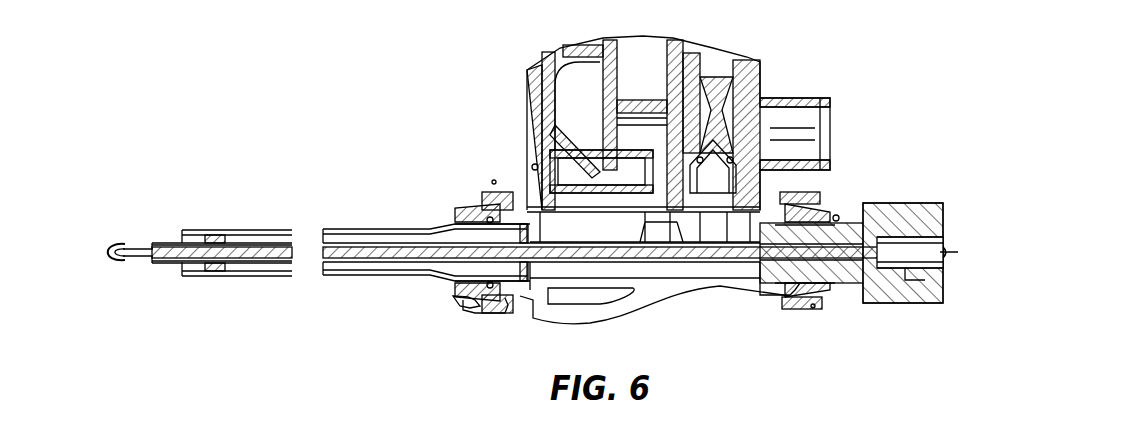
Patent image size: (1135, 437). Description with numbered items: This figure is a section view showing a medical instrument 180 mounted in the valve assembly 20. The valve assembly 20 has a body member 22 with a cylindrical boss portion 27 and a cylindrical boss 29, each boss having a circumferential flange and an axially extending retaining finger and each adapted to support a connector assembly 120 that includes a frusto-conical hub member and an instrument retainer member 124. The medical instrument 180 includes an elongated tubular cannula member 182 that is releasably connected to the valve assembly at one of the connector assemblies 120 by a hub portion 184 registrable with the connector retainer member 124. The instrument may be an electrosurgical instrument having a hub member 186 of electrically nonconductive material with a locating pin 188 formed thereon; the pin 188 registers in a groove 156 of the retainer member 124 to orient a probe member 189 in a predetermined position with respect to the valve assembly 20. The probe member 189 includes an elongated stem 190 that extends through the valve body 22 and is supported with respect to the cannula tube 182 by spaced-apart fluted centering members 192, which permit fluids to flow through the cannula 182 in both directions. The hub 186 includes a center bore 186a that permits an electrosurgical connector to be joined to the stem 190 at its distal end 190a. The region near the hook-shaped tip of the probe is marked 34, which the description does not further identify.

The valve assembly 20 is at (760, 44).
The body member 22 is at (728, 293).
The cylindrical boss portion 27 is at (776, 297).
The cylindrical boss 29 is at (518, 305).
The hook 34 is at (104, 251).
The connector assembly 120 is at (494, 178).
The instrument retainer member 124 is at (485, 207).
The groove 156 is at (838, 216).
The medical instrument 180 is at (375, 214).
The tubular cannula member 182 is at (367, 274).
The hub portion 184 is at (468, 302).
The hub member 186 is at (923, 203).
The center bore 186a is at (907, 270).
The locating pin 188 is at (840, 222).
The probe member 189 is at (117, 262).
The stem 190 is at (658, 258).
The distal end 190a is at (945, 262).
The fluted centering members 192 is at (213, 232).